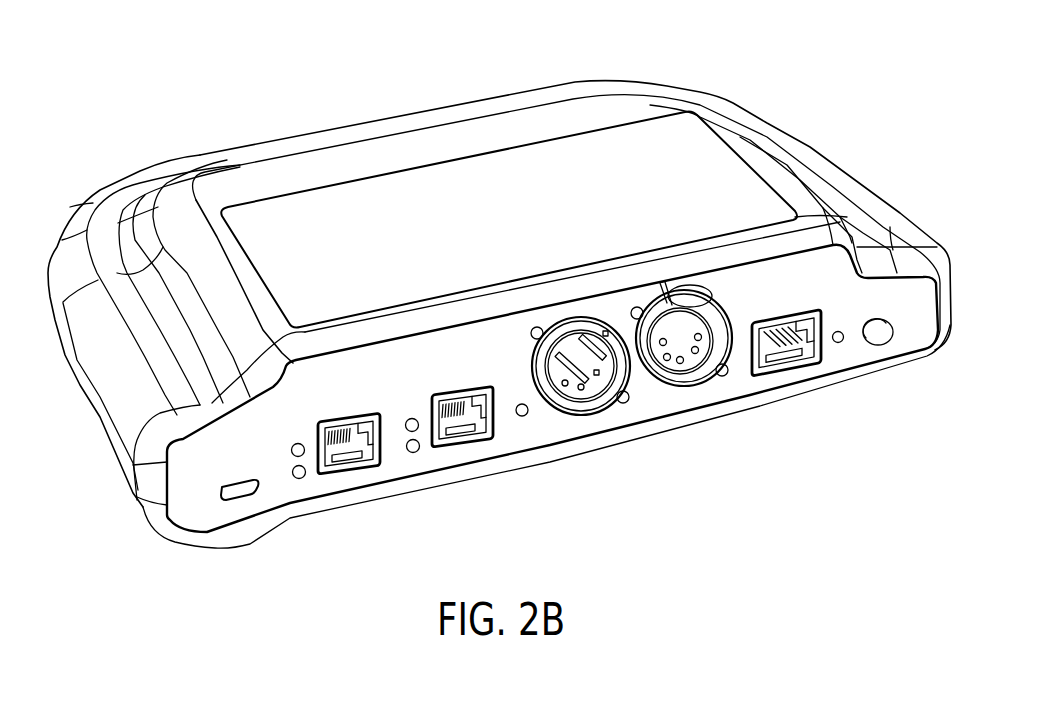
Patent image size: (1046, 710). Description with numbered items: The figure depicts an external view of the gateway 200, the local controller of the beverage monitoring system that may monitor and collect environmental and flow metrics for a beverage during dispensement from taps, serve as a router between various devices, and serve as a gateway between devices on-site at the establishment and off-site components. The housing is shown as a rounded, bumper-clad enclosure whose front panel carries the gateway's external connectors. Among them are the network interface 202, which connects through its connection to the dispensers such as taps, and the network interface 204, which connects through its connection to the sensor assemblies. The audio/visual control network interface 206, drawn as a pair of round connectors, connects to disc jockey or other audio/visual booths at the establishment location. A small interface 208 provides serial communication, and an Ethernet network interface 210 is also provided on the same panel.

The gateway 200 is at (288, 135).
The network interface 202 is at (465, 444).
The network interface 204 is at (350, 472).
The audio/visual control network interface 206 is at (738, 393).
The interface for serial communication 208 is at (240, 497).
The Ethernet network interface 210 is at (783, 363).